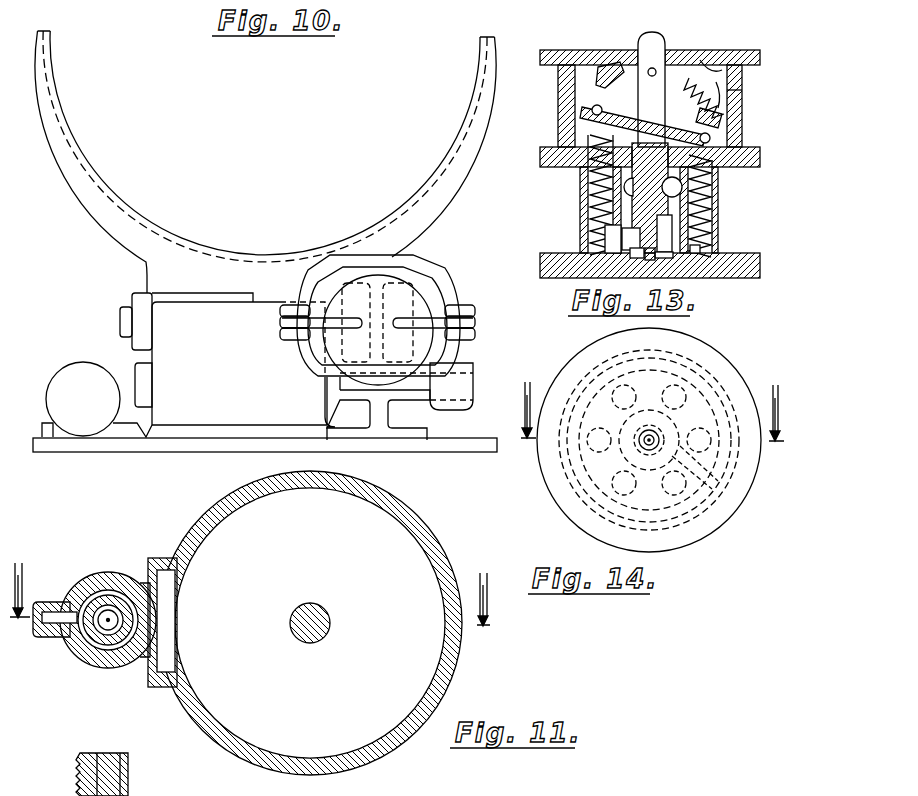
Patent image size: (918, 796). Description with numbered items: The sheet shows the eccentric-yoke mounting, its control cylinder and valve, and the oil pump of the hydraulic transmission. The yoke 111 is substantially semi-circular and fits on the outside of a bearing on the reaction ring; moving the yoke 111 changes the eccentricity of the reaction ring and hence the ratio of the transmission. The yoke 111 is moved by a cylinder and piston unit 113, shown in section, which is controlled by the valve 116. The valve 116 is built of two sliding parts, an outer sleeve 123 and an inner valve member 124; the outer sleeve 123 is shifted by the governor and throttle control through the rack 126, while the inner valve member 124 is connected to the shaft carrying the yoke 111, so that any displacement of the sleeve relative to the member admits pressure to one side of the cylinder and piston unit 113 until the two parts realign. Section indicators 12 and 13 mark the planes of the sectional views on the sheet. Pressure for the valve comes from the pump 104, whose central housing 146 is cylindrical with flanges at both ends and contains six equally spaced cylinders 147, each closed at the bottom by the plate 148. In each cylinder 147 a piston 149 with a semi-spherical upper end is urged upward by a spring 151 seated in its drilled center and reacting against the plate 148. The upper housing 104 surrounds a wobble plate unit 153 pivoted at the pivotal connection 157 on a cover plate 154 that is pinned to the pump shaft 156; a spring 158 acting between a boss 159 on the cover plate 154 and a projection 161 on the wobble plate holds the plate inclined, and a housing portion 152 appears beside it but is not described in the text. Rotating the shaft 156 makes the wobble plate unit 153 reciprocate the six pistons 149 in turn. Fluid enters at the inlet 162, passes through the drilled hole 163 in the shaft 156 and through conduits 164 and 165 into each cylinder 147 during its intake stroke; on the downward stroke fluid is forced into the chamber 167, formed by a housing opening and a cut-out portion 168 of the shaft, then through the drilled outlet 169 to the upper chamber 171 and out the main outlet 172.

In FIG. 10, the yoke 111 is at (460, 174).
In FIG. 11, the cylinder and piston unit 113 is at (393, 752).
In FIG. 11, the valve 116 is at (115, 668).
In FIG. 11, the outer sleeve 123 is at (96, 596).
In FIG. 11, the inner valve member 124 is at (108, 618).
In FIG. 11, the rack 126 is at (76, 778).
In FIG. 11, the section line 12- 12 is at (261, 610).
In FIG. 14, the section line 13- 13 is at (646, 423).
In FIG. 13, the pump housing 104 is at (560, 137).
In FIG. 13, the plate 148 is at (737, 273).
In FIG. 13, the pump shaft 156 is at (658, 34).
In FIG. 13, the main outlet 172 is at (677, 177).
In FIG. 13, the pivotal connection 157 is at (597, 87).
In FIG. 13, the wobble plate unit 153 is at (627, 107).
In FIG. 13, the cover plate 154 is at (697, 53).
In FIG. 13, the boss 159 is at (720, 63).
In FIG. 13, the spring 158 is at (720, 92).
In FIG. 13, the housing wall 152 is at (740, 92).
In FIG. 13, the projection 161 is at (720, 120).
In FIG. 13, the upper chamber 171 is at (630, 180).
In FIG. 13, the piston 149 is at (707, 187).
In FIG. 13, the drilled outlet 169 is at (620, 200).
In FIG. 13, the central housing 146 is at (717, 207).
In FIG. 13, the cut-out portion 168 is at (667, 220).
In FIG. 13, the spring 151 is at (673, 242).
In FIG. 13, the chamber 167 is at (700, 250).
In FIG. 13, the conduit 164 is at (630, 243).
In FIG. 13, the conduit 165 is at (637, 250).
In FIG. 13, the drilled hole 163 is at (640, 257).
In FIG. 13, the inlet 162 is at (649, 262).
In FIG. 14, the cylinders 147 is at (685, 387).